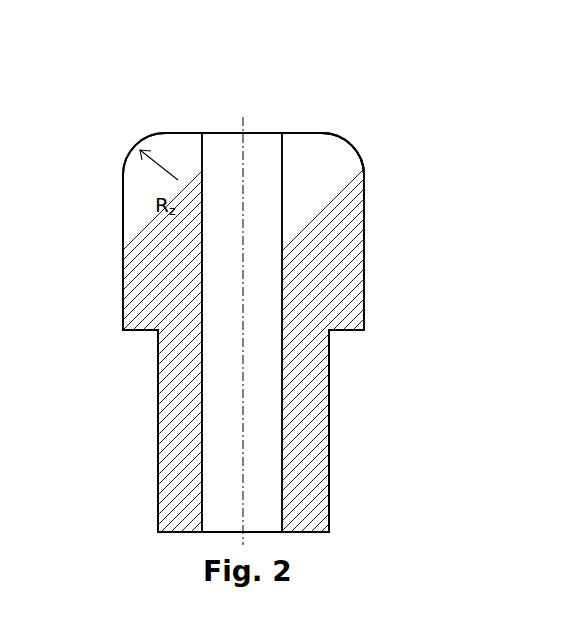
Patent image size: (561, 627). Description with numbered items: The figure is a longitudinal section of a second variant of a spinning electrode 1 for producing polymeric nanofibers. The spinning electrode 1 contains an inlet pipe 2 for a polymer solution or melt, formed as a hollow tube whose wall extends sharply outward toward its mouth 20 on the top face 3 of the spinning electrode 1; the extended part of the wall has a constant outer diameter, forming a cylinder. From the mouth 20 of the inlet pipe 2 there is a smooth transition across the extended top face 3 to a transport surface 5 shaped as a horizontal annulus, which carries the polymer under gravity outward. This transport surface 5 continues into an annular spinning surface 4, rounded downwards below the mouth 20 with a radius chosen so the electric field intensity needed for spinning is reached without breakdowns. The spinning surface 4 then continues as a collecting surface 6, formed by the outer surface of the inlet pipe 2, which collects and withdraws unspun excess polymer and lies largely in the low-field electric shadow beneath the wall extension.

The spinning electrode 1 is at (195, 53).
The inlet pipe 2 is at (158, 420).
The top face 3 is at (157, 123).
The spinning surface 4 is at (347, 142).
The transport surface 5 is at (310, 128).
The collecting surface 6 is at (365, 287).
The mouth 20 is at (213, 123).